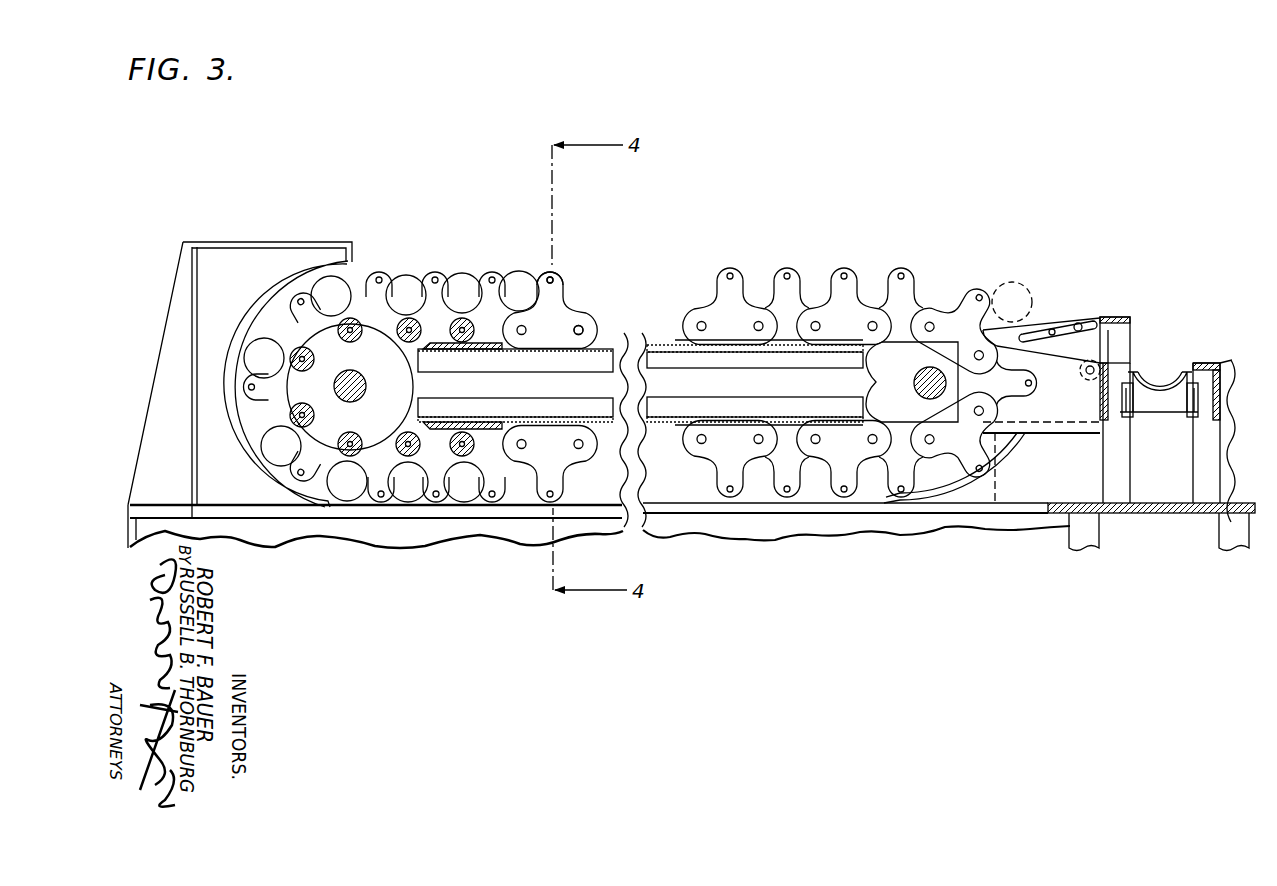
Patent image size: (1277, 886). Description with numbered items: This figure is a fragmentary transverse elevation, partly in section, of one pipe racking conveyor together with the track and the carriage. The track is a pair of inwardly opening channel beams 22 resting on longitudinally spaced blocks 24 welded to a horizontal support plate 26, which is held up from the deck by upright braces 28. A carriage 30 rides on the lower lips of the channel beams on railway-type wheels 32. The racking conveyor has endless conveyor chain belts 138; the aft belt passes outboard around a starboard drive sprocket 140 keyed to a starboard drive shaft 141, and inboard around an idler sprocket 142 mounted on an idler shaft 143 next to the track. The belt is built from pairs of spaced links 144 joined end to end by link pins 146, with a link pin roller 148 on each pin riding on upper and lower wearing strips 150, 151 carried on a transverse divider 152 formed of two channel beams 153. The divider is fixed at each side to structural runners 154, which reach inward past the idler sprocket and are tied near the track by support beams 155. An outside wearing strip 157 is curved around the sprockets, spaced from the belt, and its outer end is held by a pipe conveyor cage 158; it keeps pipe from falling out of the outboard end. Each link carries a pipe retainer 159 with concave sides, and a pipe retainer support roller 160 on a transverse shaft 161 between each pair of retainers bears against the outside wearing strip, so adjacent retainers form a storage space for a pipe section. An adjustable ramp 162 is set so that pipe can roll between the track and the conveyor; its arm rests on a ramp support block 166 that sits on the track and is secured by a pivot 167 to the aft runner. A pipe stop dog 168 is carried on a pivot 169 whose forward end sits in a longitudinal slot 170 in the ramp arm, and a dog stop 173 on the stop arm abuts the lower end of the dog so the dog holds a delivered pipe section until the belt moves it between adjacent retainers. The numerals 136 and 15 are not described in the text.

The pipe conveyor cage 158 is at (313, 243).
The outside wearing strip 157 is at (258, 443).
The link pin roller 148 is at (385, 362).
The starboard drive shaft 141 is at (353, 373).
The starboard drive sprocket 140 is at (305, 386).
The conveyor chain 136 is at (518, 260).
The pipe retainer 159 is at (402, 268).
The links 144 is at (556, 320).
The pipe retainer support roller 160 is at (557, 274).
The transverse shaft 161 is at (568, 285).
The upper wearing strip 150 is at (600, 335).
The lower wearing strip 151 is at (550, 463).
The channel beams 153 is at (483, 365).
The link pins 146 is at (544, 355).
The transverse divider 152 is at (660, 343).
The endless conveyor chain belts 138 is at (740, 281).
The idler sprocket 142 is at (878, 418).
The idler shaft 143 is at (958, 318).
The structural runners 154 is at (1013, 294).
The adjustable ramp 162 is at (1075, 311).
The dog stop 173 is at (1073, 318).
The pipe stop dog 168 is at (1048, 304).
The pivot 169 is at (1047, 343).
The pivot 167 is at (1090, 381).
The longitudinal slot 170 is at (1110, 332).
The ramp support block 166 is at (490, 540).
The channel beams 22 is at (1122, 366).
The carriage 30 is at (1160, 375).
The railway-type wheels 32 is at (1130, 412).
The blocks 24 is at (1128, 490).
The wall 15 is at (1211, 360).
The support beams 155 is at (1030, 493).
The support plate 26 is at (1165, 513).
The upright braces 28 is at (1088, 550).